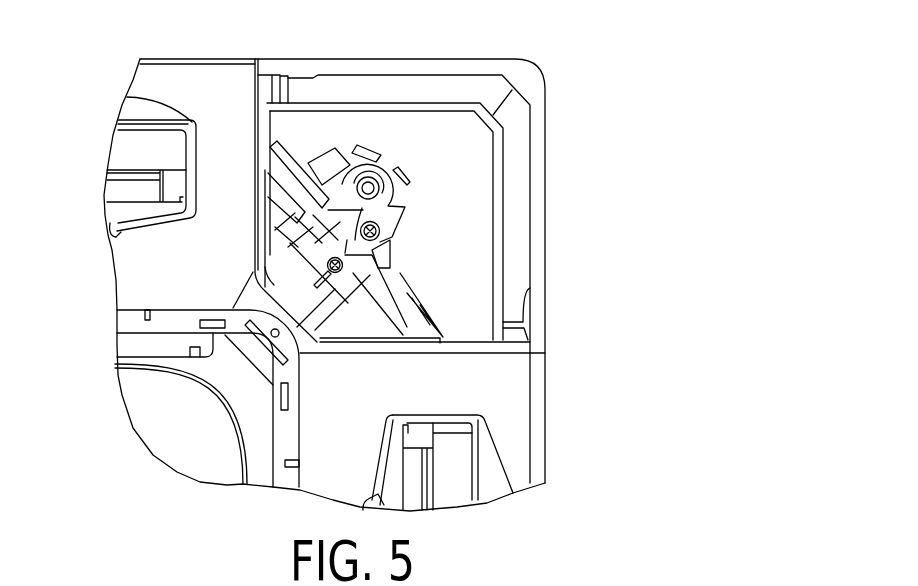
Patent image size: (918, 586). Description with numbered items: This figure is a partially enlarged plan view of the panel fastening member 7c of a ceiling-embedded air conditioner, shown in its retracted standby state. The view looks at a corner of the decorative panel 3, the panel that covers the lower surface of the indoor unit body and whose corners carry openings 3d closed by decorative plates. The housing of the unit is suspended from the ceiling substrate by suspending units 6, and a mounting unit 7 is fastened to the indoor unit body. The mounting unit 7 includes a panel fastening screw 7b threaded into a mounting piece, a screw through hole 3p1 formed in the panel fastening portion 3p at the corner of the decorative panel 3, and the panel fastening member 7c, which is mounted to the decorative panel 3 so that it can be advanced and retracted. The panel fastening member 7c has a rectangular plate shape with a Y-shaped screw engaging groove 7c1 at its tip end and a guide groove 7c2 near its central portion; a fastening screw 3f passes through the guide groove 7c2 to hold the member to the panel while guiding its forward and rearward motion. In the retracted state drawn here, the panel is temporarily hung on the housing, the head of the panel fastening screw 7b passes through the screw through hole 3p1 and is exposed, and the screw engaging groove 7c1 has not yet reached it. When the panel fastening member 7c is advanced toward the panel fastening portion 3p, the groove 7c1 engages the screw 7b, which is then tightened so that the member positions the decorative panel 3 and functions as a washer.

The decorative panel 3 is at (546, 112).
The opening 3d is at (470, 157).
The fastening screw 3f is at (337, 296).
The panel fastening portion 3p is at (392, 262).
The screw through hole 3p1 is at (369, 177).
The suspending unit 6 is at (397, 141).
The mounting unit 7 is at (428, 204).
The panel fastening screw 7b is at (380, 250).
The panel fastening member 7c is at (350, 248).
The screw engaging groove 7c1 is at (352, 248).
The guide groove 7c2 is at (327, 264).